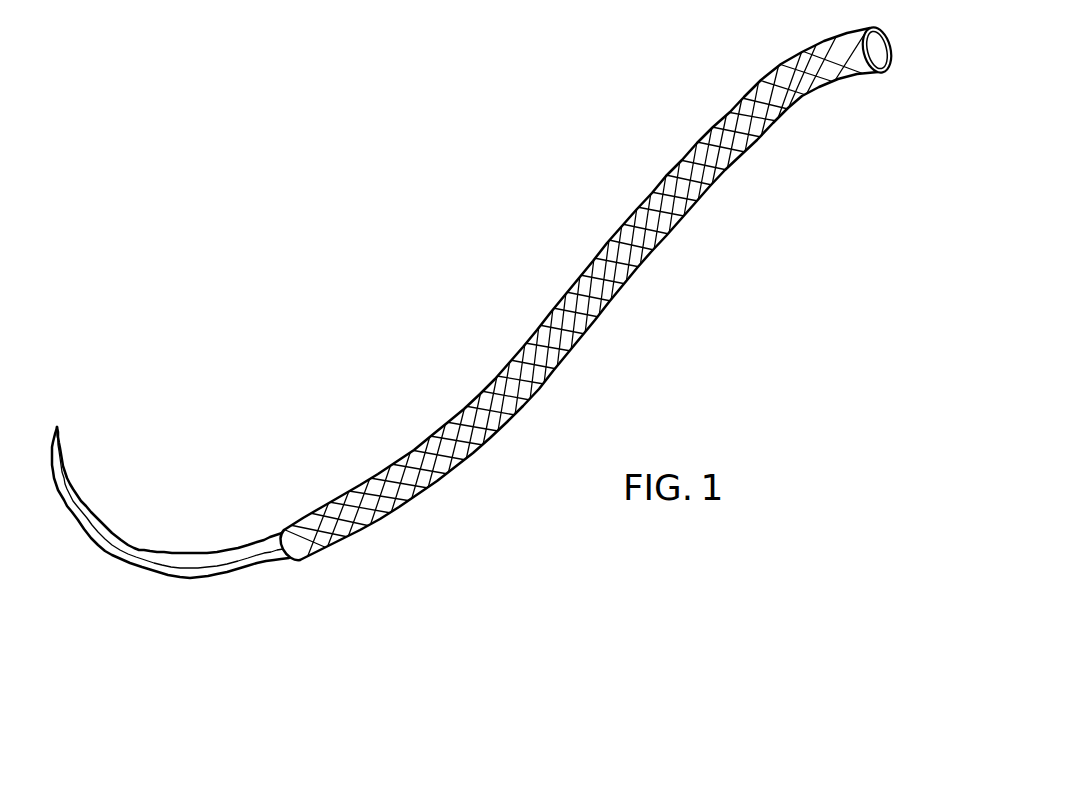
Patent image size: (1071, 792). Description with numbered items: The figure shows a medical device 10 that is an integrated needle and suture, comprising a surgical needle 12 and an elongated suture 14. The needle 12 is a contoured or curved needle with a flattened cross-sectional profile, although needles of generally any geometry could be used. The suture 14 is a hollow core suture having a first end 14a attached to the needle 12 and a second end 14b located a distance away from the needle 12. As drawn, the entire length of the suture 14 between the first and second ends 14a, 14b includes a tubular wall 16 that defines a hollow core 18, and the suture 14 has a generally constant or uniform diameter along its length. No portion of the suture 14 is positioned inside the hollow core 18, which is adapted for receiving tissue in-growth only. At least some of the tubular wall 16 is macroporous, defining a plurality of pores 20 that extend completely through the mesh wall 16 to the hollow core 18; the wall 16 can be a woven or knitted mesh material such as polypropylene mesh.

The medical device 10 is at (291, 405).
The surgical needle 12 is at (67, 468).
The elongated suture 14 is at (590, 326).
The first end 14a is at (294, 562).
The second end 14b is at (878, 75).
The tubular wall 16 is at (617, 295).
The hollow core 18 is at (711, 114).
The pores 20 is at (484, 414).